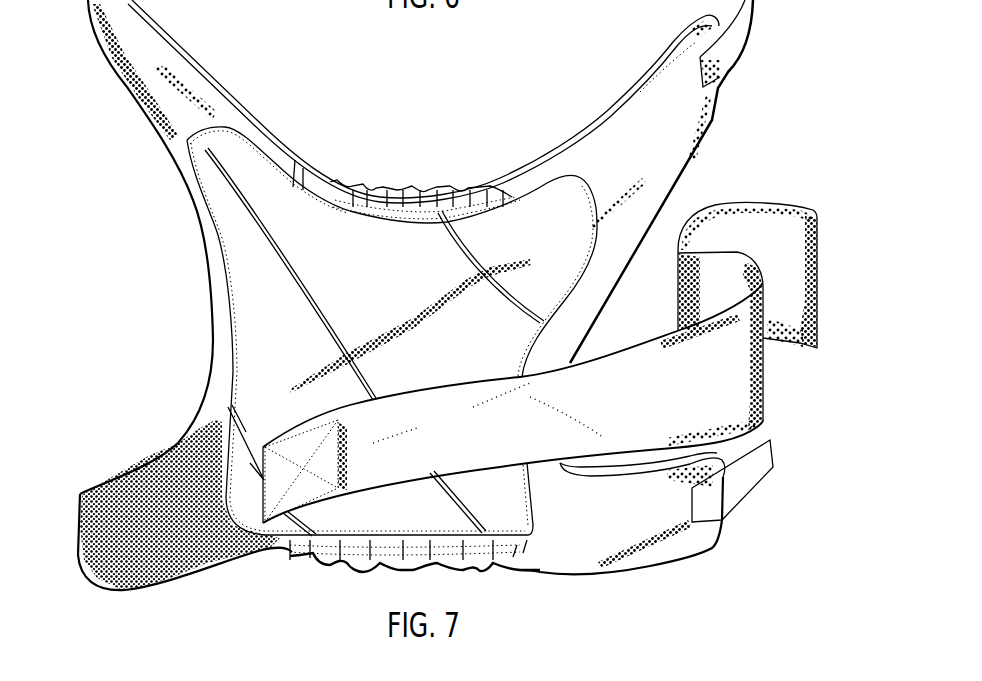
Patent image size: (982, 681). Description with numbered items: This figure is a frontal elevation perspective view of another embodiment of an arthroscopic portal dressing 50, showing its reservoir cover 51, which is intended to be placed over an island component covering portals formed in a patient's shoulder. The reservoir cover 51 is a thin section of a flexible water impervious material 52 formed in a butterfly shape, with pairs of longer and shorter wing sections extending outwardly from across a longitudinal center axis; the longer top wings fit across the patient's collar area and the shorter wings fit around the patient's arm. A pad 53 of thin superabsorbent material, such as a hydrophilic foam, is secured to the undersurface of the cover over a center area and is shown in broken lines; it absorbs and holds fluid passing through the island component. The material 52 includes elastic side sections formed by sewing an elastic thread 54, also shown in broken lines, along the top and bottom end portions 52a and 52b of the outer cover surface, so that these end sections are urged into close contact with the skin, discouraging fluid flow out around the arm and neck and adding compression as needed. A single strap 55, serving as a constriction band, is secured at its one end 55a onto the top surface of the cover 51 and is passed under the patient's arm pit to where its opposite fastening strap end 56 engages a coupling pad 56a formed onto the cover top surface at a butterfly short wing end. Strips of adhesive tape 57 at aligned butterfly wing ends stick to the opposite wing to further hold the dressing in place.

The arthroscopic portal dressing 50 is at (750, 137).
The reservoir cover 51 is at (380, 93).
The flexible water impervious material 52 is at (630, 117).
The top end portion 52a is at (340, 182).
The bottom end portion 52b is at (293, 558).
The pad 53 is at (430, 245).
The elastic thread 54 is at (400, 193).
The strap 55 is at (640, 418).
The strap end 55a is at (290, 437).
The fastening strap end 56 is at (793, 283).
The coupling pad 56a is at (132, 490).
The strips of adhesive tape 57 is at (750, 20).